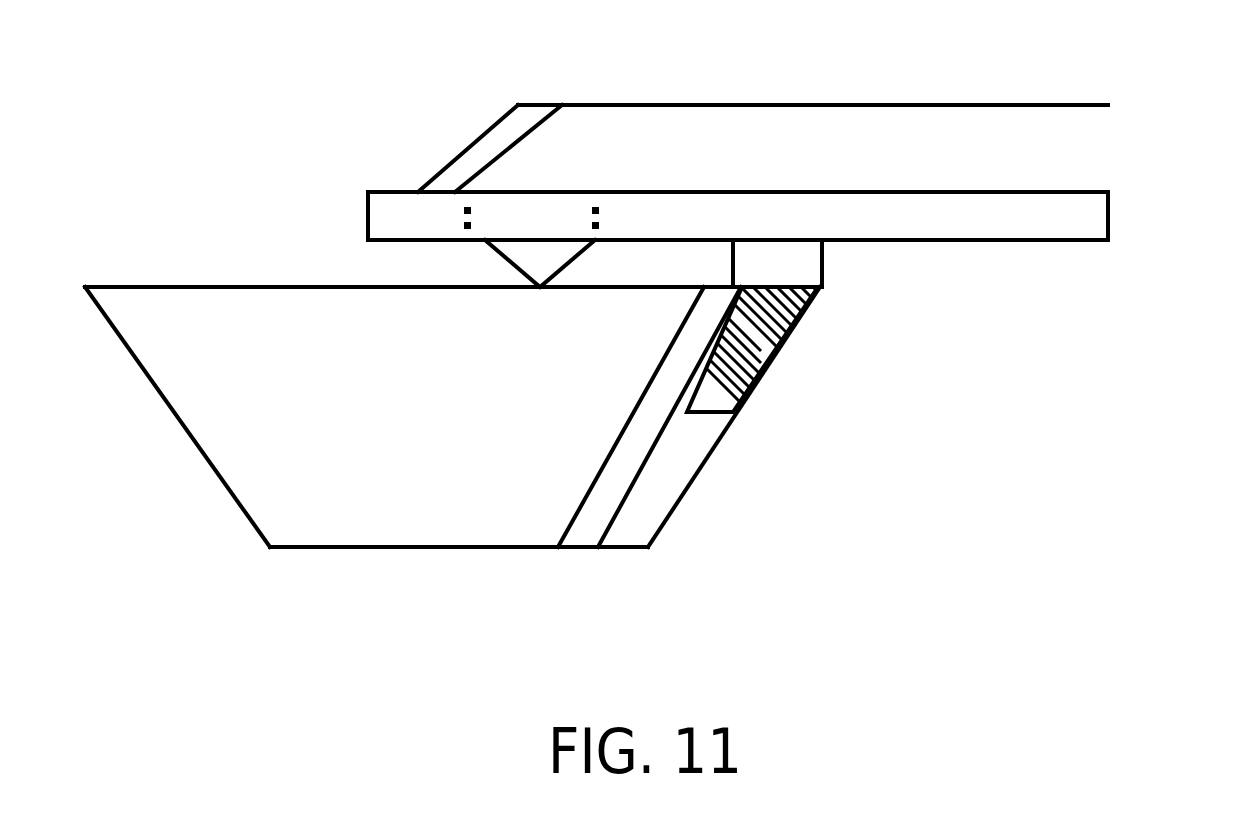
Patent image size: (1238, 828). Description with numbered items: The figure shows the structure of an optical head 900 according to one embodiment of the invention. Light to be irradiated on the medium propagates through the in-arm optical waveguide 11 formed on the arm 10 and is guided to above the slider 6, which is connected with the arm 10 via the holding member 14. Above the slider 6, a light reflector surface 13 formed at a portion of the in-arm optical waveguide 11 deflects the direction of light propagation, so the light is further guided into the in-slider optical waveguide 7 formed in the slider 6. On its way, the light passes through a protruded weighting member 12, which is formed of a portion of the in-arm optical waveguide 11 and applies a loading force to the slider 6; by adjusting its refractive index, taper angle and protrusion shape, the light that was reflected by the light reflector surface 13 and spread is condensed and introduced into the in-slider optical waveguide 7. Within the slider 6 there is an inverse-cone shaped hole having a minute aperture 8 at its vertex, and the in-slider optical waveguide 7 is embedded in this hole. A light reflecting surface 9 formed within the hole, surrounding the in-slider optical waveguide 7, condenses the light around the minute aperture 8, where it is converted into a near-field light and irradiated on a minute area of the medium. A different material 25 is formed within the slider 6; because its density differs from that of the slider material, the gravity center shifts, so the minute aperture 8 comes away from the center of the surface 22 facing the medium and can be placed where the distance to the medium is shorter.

The assembly 900 is at (193, 183).
The in-arm optical waveguide 11 is at (968, 122).
The light reflector surface 13 is at (470, 152).
The arm 10 is at (1028, 210).
The holding member 14 is at (797, 272).
The weighting member 12 is at (507, 255).
The slider 6 is at (323, 417).
The surface facing the medium 22 is at (300, 550).
The minute aperture 8 is at (540, 547).
The in-slider optical waveguide 7 is at (547, 425).
The light reflecting surface 9 is at (608, 505).
The different material 25 is at (755, 350).